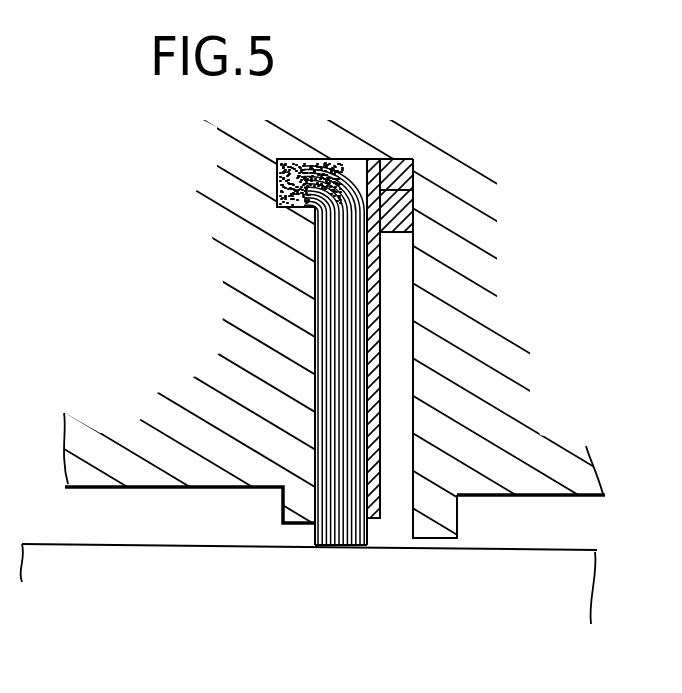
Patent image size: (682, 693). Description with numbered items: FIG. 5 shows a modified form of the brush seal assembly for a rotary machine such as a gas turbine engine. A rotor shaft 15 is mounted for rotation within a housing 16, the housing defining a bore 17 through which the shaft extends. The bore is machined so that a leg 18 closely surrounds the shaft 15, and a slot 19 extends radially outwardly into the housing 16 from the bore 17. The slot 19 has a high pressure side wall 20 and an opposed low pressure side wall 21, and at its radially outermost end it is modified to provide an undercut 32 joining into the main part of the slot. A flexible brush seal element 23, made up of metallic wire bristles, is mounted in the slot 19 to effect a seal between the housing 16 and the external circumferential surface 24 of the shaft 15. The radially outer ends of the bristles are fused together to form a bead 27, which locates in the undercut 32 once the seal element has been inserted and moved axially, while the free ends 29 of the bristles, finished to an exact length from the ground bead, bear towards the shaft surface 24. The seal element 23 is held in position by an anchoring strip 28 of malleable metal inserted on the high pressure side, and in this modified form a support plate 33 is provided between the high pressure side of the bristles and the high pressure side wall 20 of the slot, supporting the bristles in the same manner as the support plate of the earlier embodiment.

The rotor shaft 15 is at (518, 567).
The housing 16 is at (240, 179).
The bore 17 is at (540, 531).
The leg 18 is at (432, 518).
The slot 19 is at (400, 308).
The high pressure side wall 20 is at (413, 376).
The low pressure side wall 21 is at (312, 273).
The brush seal element 23 is at (314, 305).
The external circumferential surface 24 is at (120, 543).
The bead 27 is at (337, 165).
The anchoring strip 28 is at (413, 207).
The free ends 29 is at (335, 547).
The undercut 32 is at (287, 162).
The support plate 33 is at (400, 260).